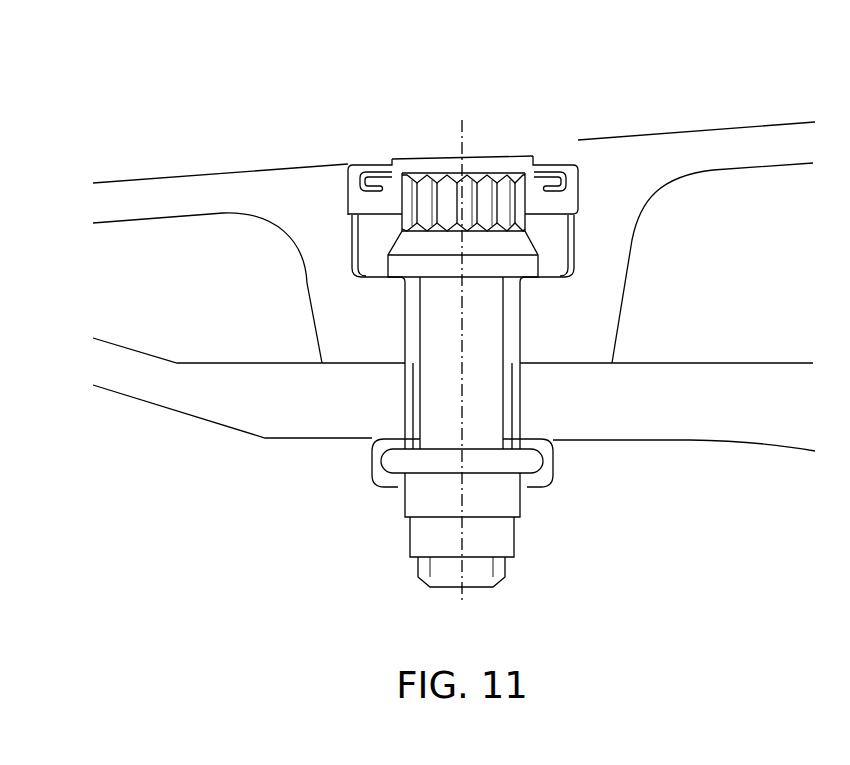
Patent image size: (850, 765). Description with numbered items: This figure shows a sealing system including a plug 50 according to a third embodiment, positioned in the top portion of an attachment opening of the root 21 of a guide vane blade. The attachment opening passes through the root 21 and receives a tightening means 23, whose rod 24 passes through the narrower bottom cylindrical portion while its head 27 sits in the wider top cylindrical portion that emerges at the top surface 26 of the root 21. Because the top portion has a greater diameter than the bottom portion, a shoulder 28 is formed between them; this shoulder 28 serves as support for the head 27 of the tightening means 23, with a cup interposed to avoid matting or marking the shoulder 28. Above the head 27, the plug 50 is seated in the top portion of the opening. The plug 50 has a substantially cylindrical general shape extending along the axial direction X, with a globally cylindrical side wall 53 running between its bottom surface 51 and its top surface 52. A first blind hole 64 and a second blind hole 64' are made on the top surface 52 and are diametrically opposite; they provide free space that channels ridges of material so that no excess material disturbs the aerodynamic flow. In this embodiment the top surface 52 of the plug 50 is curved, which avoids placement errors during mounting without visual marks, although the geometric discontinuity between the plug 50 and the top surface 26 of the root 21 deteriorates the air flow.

The root 21 is at (680, 152).
The top surface 26 is at (176, 172).
The side wall 53 is at (343, 200).
The top surface 52 is at (497, 158).
The first blind hole 64 is at (365, 124).
The second blind hole 64' is at (554, 123).
The head 27 is at (440, 208).
The plug 50 is at (455, 163).
The bottom surface 51 is at (542, 219).
The shoulder 28 is at (355, 283).
The rod 24 is at (444, 403).
The tightening means 23 is at (507, 418).